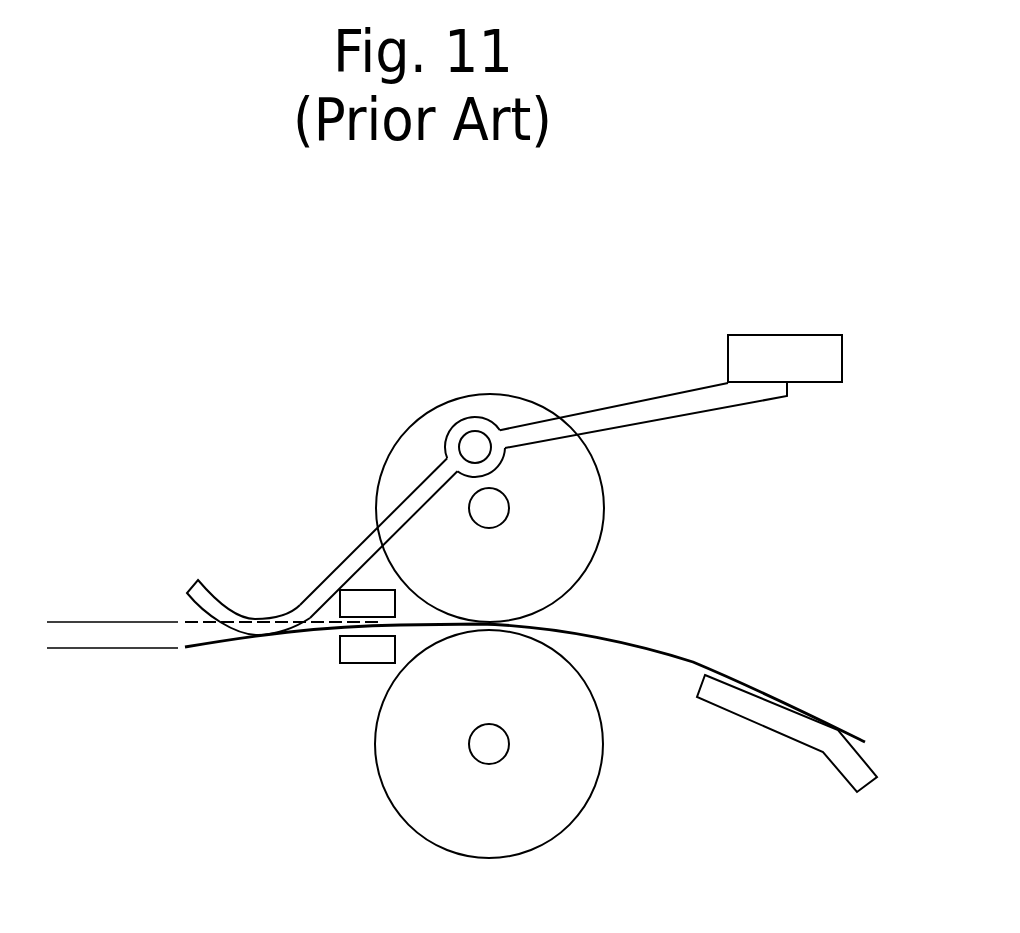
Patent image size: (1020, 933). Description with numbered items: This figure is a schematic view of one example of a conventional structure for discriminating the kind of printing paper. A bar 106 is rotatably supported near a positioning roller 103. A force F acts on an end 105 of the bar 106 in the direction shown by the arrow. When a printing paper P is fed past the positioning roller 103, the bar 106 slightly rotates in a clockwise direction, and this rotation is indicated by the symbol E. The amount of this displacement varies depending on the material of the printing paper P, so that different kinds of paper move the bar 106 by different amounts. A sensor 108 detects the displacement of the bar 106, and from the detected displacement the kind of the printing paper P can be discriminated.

The positioning roller 103 is at (585, 518).
The end of the bar 105 is at (223, 617).
The bar 106 is at (615, 405).
The sensor 108 is at (785, 335).
The printing paper P is at (693, 662).
The force F is at (258, 618).
The displacement E is at (75, 695).